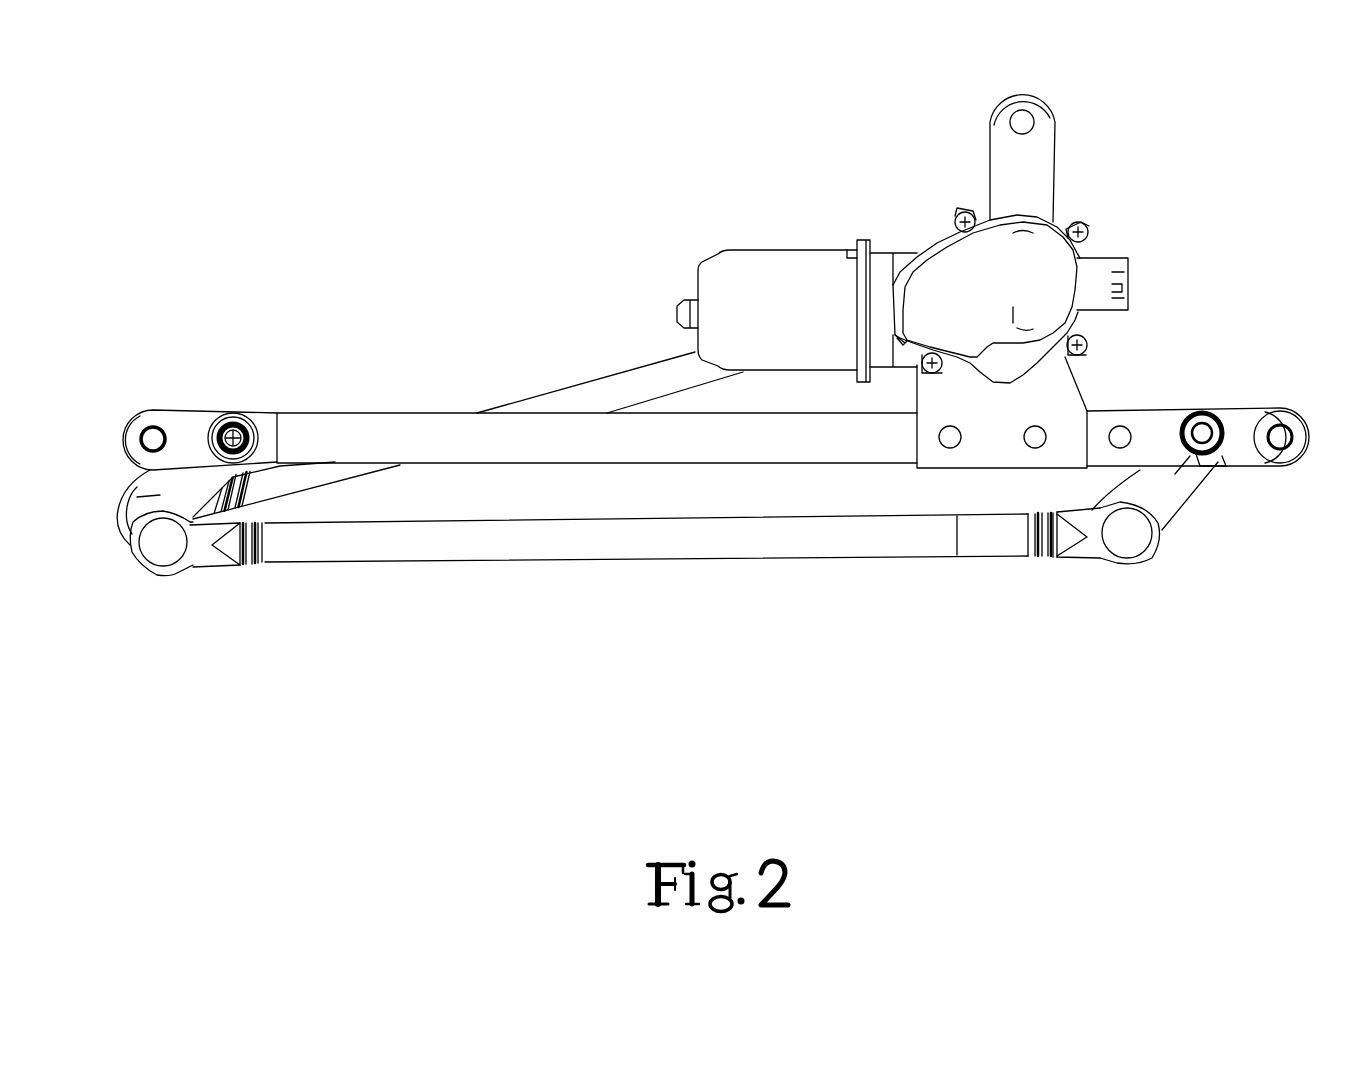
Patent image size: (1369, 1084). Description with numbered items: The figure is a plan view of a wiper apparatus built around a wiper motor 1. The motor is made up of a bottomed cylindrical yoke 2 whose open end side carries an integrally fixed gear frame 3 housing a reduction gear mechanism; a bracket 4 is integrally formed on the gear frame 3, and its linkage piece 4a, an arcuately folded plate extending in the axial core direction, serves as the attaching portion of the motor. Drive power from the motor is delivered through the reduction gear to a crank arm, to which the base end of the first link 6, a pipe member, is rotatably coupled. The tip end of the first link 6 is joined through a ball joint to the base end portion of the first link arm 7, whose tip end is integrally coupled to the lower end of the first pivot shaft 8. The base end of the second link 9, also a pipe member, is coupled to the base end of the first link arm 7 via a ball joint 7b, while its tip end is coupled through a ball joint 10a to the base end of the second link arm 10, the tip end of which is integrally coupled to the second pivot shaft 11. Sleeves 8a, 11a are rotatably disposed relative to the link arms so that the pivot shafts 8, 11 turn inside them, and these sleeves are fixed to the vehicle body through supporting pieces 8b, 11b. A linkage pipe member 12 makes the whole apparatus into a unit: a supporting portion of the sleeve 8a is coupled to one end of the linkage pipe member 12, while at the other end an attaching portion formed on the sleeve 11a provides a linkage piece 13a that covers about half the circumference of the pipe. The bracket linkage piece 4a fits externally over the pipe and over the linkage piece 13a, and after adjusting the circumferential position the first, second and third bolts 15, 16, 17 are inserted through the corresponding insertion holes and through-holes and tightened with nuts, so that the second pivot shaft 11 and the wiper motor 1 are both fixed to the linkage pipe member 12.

The wiper motor 1 is at (843, 223).
The cylindrical yoke 2 is at (772, 272).
The gear frame 3 is at (890, 270).
The bracket 4 is at (1040, 293).
The linkage piece 4a is at (1058, 380).
The first link 6 is at (607, 385).
The first link arm 7 is at (118, 505).
The ball joint 7b is at (170, 553).
The first pivot shaft 8 is at (245, 416).
The sleeve 8a is at (227, 418).
The supporting piece 8b is at (154, 427).
The second link 9 is at (750, 545).
The second link arm 10 is at (1152, 445).
The ball joint 10a is at (1127, 550).
The second pivot shaft 11 is at (1206, 424).
The sleeve 11a is at (1218, 455).
The supporting piece 11b is at (1284, 430).
The linkage pipe member 12 is at (575, 443).
The linkage piece 13a is at (1166, 497).
The first bolt 15 is at (950, 455).
The second bolt 16 is at (1035, 455).
The third bolt 17 is at (1117, 455).